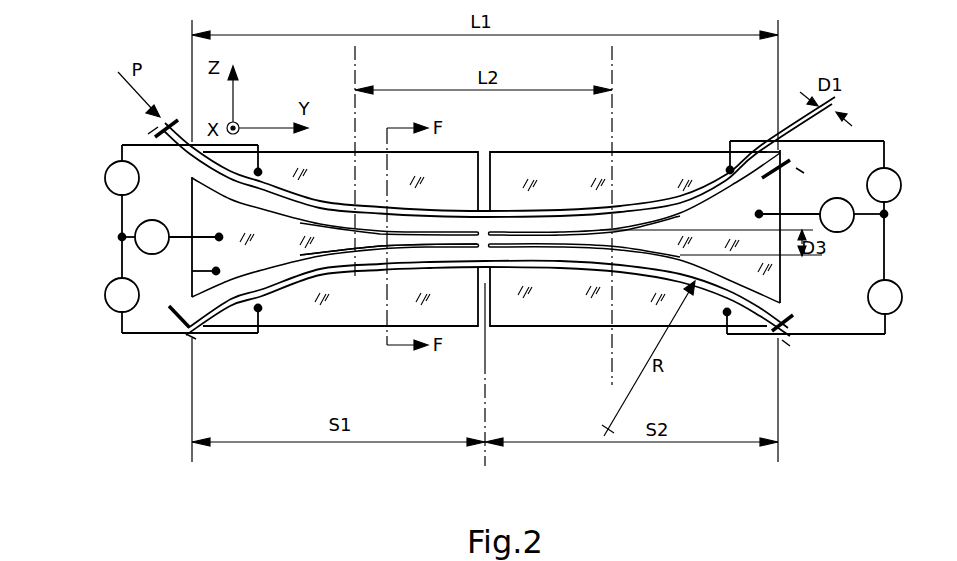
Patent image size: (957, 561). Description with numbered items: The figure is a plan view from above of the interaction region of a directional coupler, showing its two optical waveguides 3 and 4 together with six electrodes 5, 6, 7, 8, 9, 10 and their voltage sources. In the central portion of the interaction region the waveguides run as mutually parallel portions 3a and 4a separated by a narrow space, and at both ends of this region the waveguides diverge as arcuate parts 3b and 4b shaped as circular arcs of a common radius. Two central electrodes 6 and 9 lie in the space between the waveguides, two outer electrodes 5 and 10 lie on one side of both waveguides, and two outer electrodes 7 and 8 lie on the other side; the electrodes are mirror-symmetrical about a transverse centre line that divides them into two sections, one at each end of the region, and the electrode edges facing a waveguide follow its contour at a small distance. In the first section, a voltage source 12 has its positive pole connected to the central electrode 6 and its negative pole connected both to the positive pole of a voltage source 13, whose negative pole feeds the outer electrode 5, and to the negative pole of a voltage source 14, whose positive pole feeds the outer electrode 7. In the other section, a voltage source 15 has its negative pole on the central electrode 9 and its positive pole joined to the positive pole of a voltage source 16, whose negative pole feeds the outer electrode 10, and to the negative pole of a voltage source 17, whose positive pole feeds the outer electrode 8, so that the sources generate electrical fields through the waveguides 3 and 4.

The waveguide 3 is at (778, 179).
The parallel portion of waveguide 3a is at (437, 223).
The arcuate part of waveguide 3b is at (650, 222).
The waveguide 4 is at (732, 292).
The parallel portion of waveguide 4a is at (457, 253).
The arcuate part of waveguide 4b is at (287, 267).
The outer electrode 5 is at (316, 172).
The central electrode 6 is at (192, 271).
The outer electrode 7 is at (363, 300).
The outer electrode 8 is at (545, 300).
The central electrode 9 is at (774, 267).
The outer electrode 10 is at (671, 172).
The voltage source 12 is at (142, 234).
The voltage source 13 is at (108, 182).
The voltage source 14 is at (112, 300).
The voltage source 15 is at (834, 204).
The voltage source 16 is at (898, 188).
The voltage source 17 is at (898, 300).